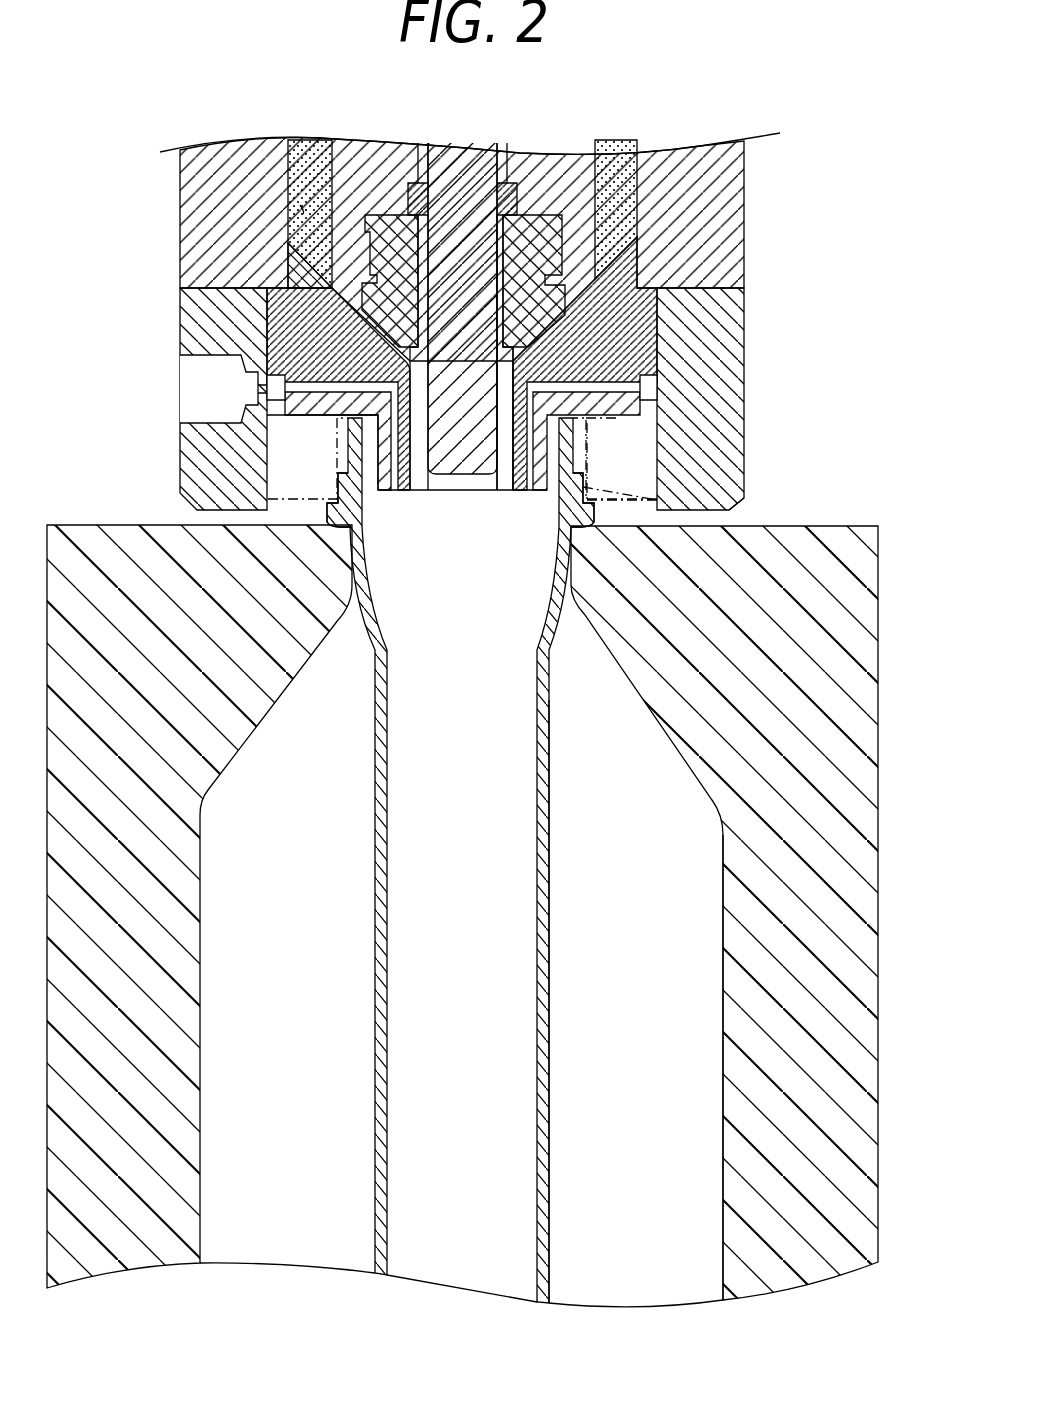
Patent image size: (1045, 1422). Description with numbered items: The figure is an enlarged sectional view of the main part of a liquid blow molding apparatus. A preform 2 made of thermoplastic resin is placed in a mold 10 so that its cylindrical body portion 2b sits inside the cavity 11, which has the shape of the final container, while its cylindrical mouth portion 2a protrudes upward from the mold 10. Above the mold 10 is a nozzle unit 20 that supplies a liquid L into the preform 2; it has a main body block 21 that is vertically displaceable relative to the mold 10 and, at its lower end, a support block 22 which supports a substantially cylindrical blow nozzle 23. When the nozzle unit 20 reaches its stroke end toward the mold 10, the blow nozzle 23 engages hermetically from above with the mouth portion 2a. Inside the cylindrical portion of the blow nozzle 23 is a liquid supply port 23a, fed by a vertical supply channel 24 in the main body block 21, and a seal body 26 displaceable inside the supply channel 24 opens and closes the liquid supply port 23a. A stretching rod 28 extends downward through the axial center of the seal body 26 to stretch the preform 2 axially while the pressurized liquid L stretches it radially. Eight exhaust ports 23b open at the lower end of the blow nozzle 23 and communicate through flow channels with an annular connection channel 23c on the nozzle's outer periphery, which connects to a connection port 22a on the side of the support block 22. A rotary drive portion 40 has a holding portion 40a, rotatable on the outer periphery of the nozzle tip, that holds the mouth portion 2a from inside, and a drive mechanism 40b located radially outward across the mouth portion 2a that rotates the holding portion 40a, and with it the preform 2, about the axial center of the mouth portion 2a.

The preform 2 is at (556, 860).
The mouth portion 2a is at (585, 447).
The body portion 2b is at (551, 940).
The mold 10 is at (880, 912).
The cavity 11 is at (722, 1000).
The nozzle unit 20 is at (477, 326).
The main body block 21 is at (723, 268).
The support block 22 is at (425, 373).
The connection port 22a is at (200, 392).
The blow nozzle 23 is at (613, 263).
The liquid supply port 23a is at (502, 450).
The exhaust port 23b is at (388, 490).
The connection channel 23c is at (658, 388).
The supply channel 24 is at (306, 152).
The seal body 26 is at (535, 215).
The stretching rod 28 is at (451, 460).
The rotary drive portion 40 is at (700, 438).
The holding portion 40a is at (742, 497).
The drive mechanism 40b is at (665, 413).
The liquid L is at (303, 208).